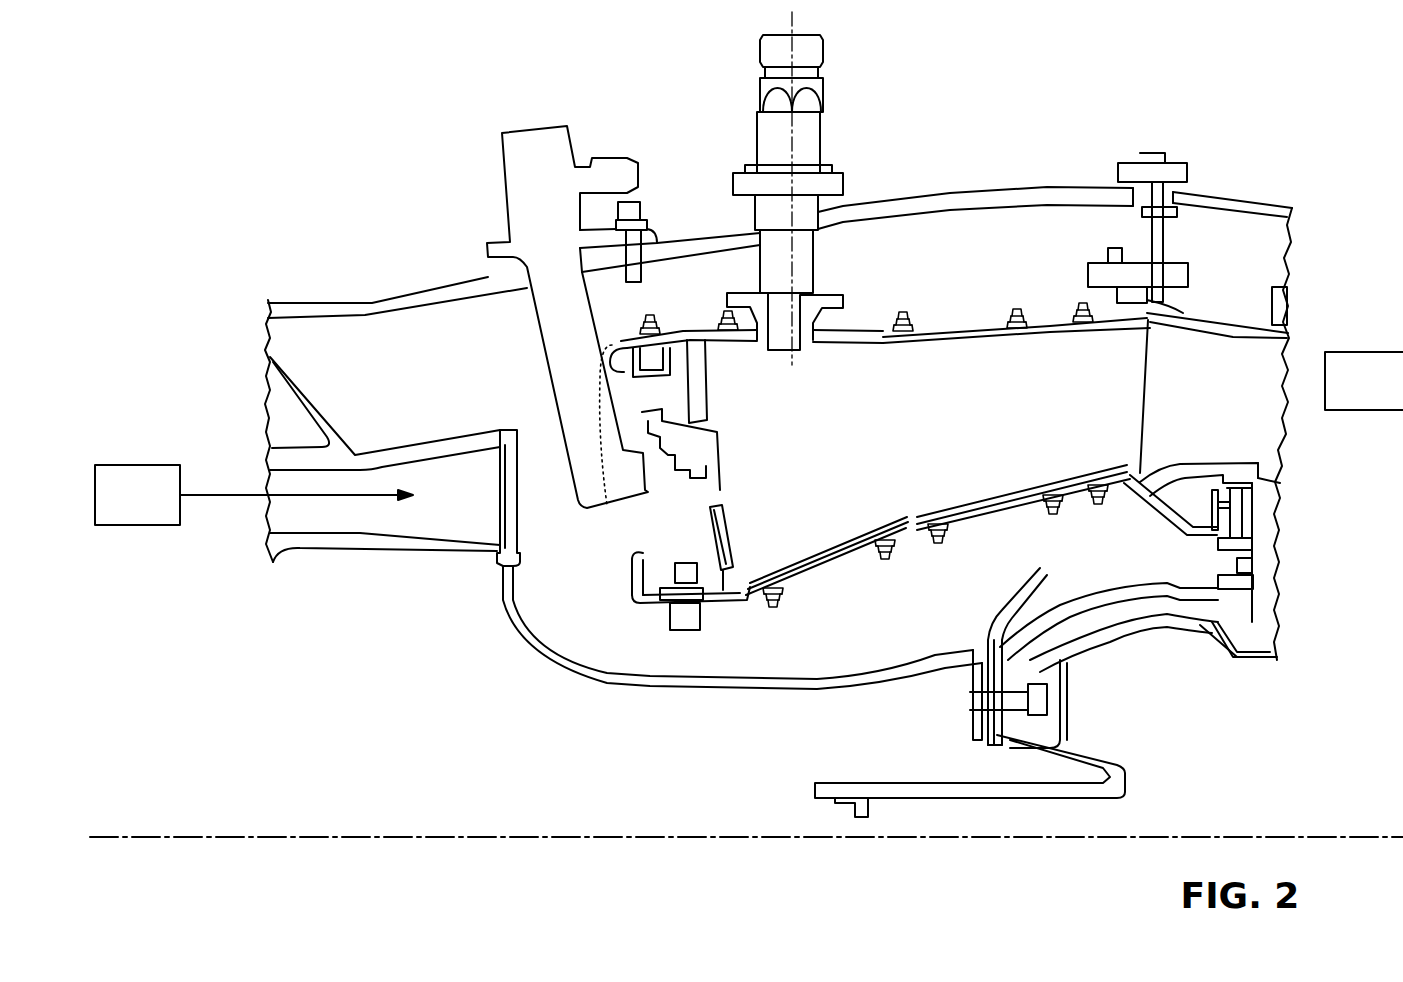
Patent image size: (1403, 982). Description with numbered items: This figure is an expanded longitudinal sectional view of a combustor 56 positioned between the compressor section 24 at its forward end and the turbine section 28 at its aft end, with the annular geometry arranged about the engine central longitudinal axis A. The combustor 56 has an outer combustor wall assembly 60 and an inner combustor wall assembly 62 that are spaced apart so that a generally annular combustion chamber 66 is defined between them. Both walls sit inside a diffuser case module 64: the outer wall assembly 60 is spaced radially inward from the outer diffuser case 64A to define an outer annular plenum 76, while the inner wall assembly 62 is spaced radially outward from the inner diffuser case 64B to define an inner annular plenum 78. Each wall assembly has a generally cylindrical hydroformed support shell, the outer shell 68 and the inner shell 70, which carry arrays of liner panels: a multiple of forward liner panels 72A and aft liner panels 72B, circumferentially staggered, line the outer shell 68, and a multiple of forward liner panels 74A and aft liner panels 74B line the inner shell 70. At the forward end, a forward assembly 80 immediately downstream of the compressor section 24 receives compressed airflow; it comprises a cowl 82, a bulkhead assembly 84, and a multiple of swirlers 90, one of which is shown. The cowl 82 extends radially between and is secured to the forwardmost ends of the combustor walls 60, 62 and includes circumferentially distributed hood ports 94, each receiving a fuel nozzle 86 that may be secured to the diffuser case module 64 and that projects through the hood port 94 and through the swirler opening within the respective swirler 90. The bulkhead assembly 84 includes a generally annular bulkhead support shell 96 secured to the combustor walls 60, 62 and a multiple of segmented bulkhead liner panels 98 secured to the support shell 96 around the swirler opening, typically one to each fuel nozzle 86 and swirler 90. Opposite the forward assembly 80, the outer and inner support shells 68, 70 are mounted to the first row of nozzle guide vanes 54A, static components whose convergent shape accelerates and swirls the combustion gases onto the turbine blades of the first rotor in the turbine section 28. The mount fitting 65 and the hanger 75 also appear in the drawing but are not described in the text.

The compressor section 24 is at (149, 505).
The turbine section 28 is at (1375, 392).
The first row of Nozzle Guide Vanes 54A is at (1218, 395).
The combustor 56 is at (1137, 112).
The outer combustor wall assembly 60 is at (984, 322).
The inner combustor wall assembly 62 is at (912, 545).
The diffuser case module 64 is at (978, 190).
The outer diffuser case 64A is at (887, 205).
The inner diffuser case 64B is at (820, 690).
The case fastener 65 is at (1068, 190).
The combustion chamber 66 is at (939, 439).
The outer support shell 68 is at (948, 333).
The inner support shell 70 is at (1052, 517).
The forward liner panels 72A is at (825, 345).
The aft liner panels 72B is at (1010, 338).
The forward liner panels 74A is at (872, 540).
The aft liner panels 74B is at (992, 500).
The liner hanger 75 is at (1098, 510).
The outer annular plenum 76 is at (905, 276).
The inner annular plenum 78 is at (838, 642).
The forward assembly 80 is at (640, 607).
The cowl 82 is at (640, 565).
The bulkhead assembly 84 is at (785, 200).
The fuel nozzle 86 is at (560, 224).
The swirler 90 is at (730, 500).
The hood port 94 is at (625, 555).
The bulkhead support shell 96 is at (637, 600).
The bulkhead liner panels 98 is at (730, 545).
The engine central longitudinal axis A is at (1220, 837).